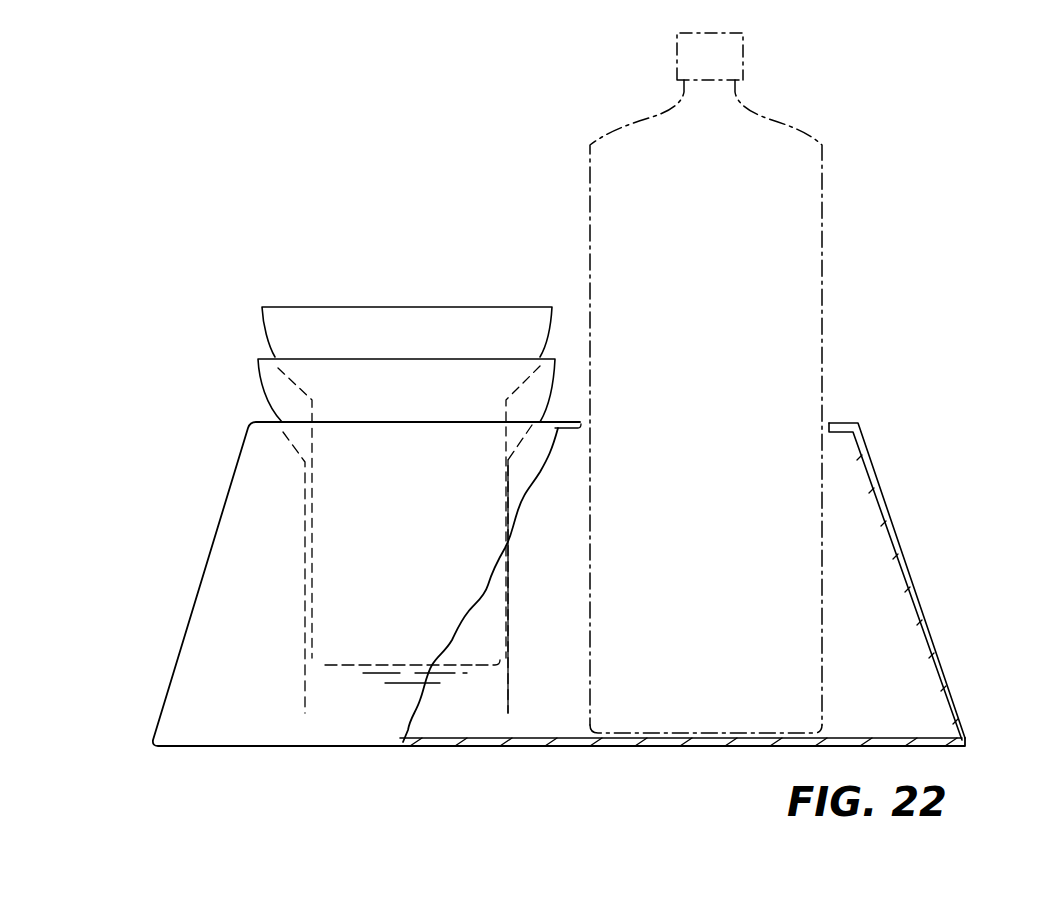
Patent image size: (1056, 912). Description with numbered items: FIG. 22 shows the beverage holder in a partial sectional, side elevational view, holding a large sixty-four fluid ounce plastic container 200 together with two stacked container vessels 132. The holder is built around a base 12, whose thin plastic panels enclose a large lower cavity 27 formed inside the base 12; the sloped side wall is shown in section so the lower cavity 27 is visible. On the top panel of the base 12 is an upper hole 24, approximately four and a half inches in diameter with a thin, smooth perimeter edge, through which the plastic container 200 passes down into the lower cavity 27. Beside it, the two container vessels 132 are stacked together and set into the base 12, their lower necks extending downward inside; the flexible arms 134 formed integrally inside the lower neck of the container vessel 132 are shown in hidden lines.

The base 12 is at (243, 455).
The upper hole 24 is at (845, 562).
The lower cavity 27 is at (897, 634).
The container vessel 132 is at (262, 320).
The flexible arms 134 is at (275, 408).
The plastic container 200 is at (824, 142).